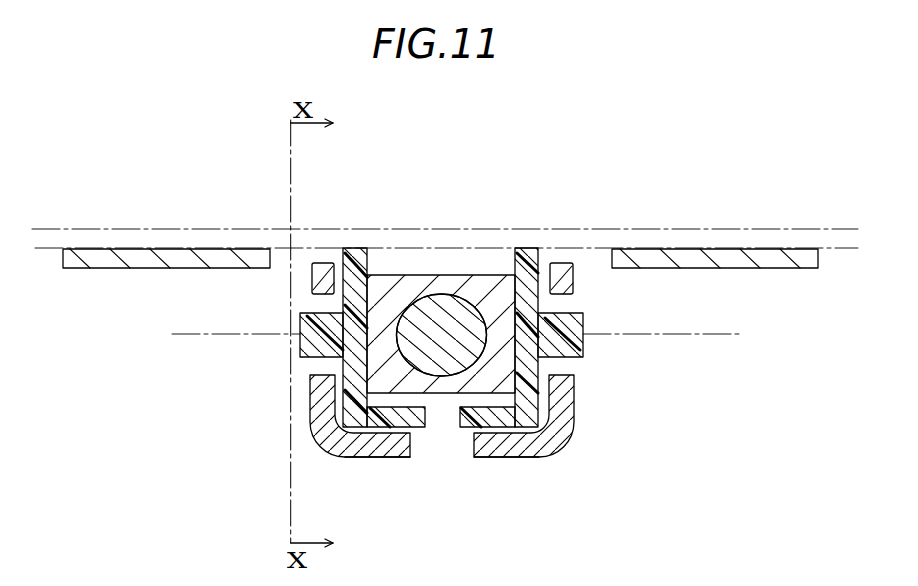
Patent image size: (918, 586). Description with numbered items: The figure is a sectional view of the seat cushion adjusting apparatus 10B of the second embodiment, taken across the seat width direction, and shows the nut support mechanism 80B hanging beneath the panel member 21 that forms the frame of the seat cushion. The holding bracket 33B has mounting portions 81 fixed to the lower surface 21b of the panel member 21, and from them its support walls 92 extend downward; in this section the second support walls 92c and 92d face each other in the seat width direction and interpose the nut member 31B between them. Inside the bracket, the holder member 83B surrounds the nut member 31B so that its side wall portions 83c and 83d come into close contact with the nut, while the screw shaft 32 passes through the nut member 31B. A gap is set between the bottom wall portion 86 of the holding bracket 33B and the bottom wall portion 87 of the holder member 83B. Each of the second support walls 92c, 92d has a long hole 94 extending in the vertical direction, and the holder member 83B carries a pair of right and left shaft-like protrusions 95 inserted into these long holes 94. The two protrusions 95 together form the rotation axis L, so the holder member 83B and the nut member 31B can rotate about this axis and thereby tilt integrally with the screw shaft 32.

The seat cushion adjusting apparatus 10B is at (91, 131).
The panel member 21 is at (63, 228).
The lower surface 21b is at (606, 248).
The mounting portions 81 is at (113, 268).
The holding bracket 33B is at (407, 458).
The rotation axis L is at (678, 335).
The nut support mechanism 80B is at (166, 488).
The side wall portion 83c is at (347, 250).
The side wall portion 83d is at (557, 252).
The holder member 83B is at (460, 427).
The nut member 31B is at (473, 275).
The screw shaft 32 is at (406, 303).
The long holes 94 is at (318, 296).
The shaft-like protrusions 95 is at (300, 350).
The support walls 92 is at (435, 416).
The second support wall 92c is at (312, 381).
The second support wall 92d is at (569, 388).
The bottom wall portion 86 is at (360, 457).
The bottom wall portion 87 is at (495, 425).